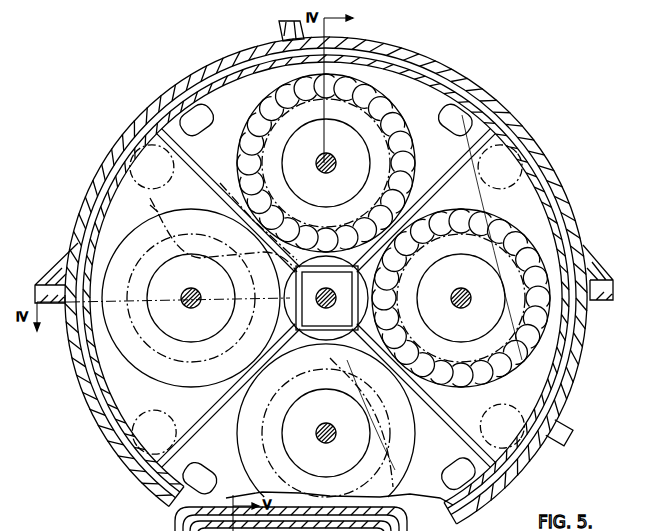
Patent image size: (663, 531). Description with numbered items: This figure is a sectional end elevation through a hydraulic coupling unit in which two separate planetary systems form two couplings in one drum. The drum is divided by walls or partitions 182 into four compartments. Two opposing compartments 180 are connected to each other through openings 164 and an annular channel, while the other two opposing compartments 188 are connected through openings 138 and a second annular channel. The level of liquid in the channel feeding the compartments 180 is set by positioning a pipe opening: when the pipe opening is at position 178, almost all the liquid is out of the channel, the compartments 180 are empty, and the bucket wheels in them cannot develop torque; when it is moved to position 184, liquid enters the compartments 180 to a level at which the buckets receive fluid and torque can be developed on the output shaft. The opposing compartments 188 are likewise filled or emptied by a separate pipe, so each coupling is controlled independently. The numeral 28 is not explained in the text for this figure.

The mounting lug 28 is at (281, 22).
The openings 138 is at (148, 163).
The openings 164 is at (205, 105).
The pipe opening position 178 is at (282, 70).
The compartments 180 is at (167, 474).
The walls or partitions 182 is at (158, 213).
The pipe opening position 184 is at (148, 205).
The opposing compartments 188 is at (167, 402).